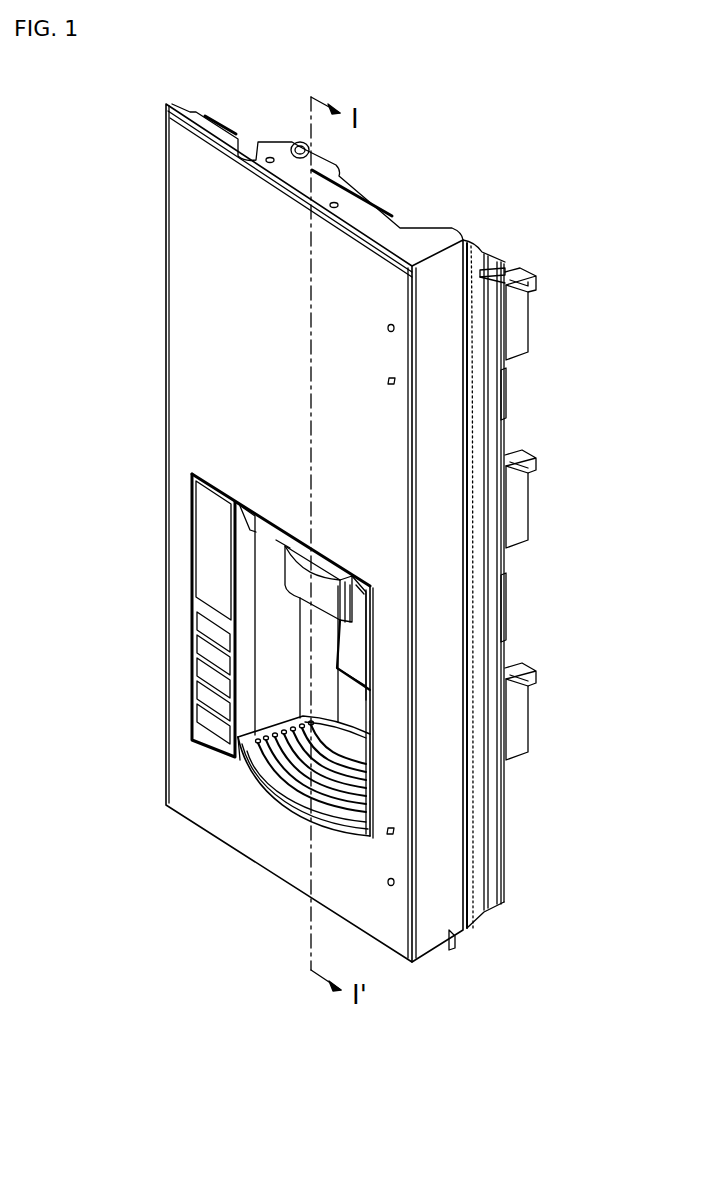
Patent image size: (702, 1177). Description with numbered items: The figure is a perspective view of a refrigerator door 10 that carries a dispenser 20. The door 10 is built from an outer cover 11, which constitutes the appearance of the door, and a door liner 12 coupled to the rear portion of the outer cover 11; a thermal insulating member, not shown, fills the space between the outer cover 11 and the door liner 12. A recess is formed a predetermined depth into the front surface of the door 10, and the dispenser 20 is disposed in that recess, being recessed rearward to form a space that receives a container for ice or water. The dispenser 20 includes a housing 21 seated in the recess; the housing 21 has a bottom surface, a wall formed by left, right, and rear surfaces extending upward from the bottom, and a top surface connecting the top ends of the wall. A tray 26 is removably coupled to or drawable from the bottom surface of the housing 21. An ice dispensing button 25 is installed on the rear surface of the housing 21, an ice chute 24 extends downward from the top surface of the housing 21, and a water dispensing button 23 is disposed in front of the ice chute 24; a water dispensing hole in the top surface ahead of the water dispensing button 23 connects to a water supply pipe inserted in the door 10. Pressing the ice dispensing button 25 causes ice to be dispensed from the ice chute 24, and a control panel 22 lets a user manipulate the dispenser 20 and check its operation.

The door 10 is at (462, 176).
The outer cover 11 is at (205, 342).
The door liner 12 is at (477, 398).
The dispenser 20 is at (186, 612).
The housing 21 is at (272, 675).
The control panel 22 is at (205, 541).
The water dispensing button 23 is at (326, 596).
The ice chute 24 is at (360, 603).
The ice dispensing button 25 is at (358, 661).
The tray 26 is at (262, 782).